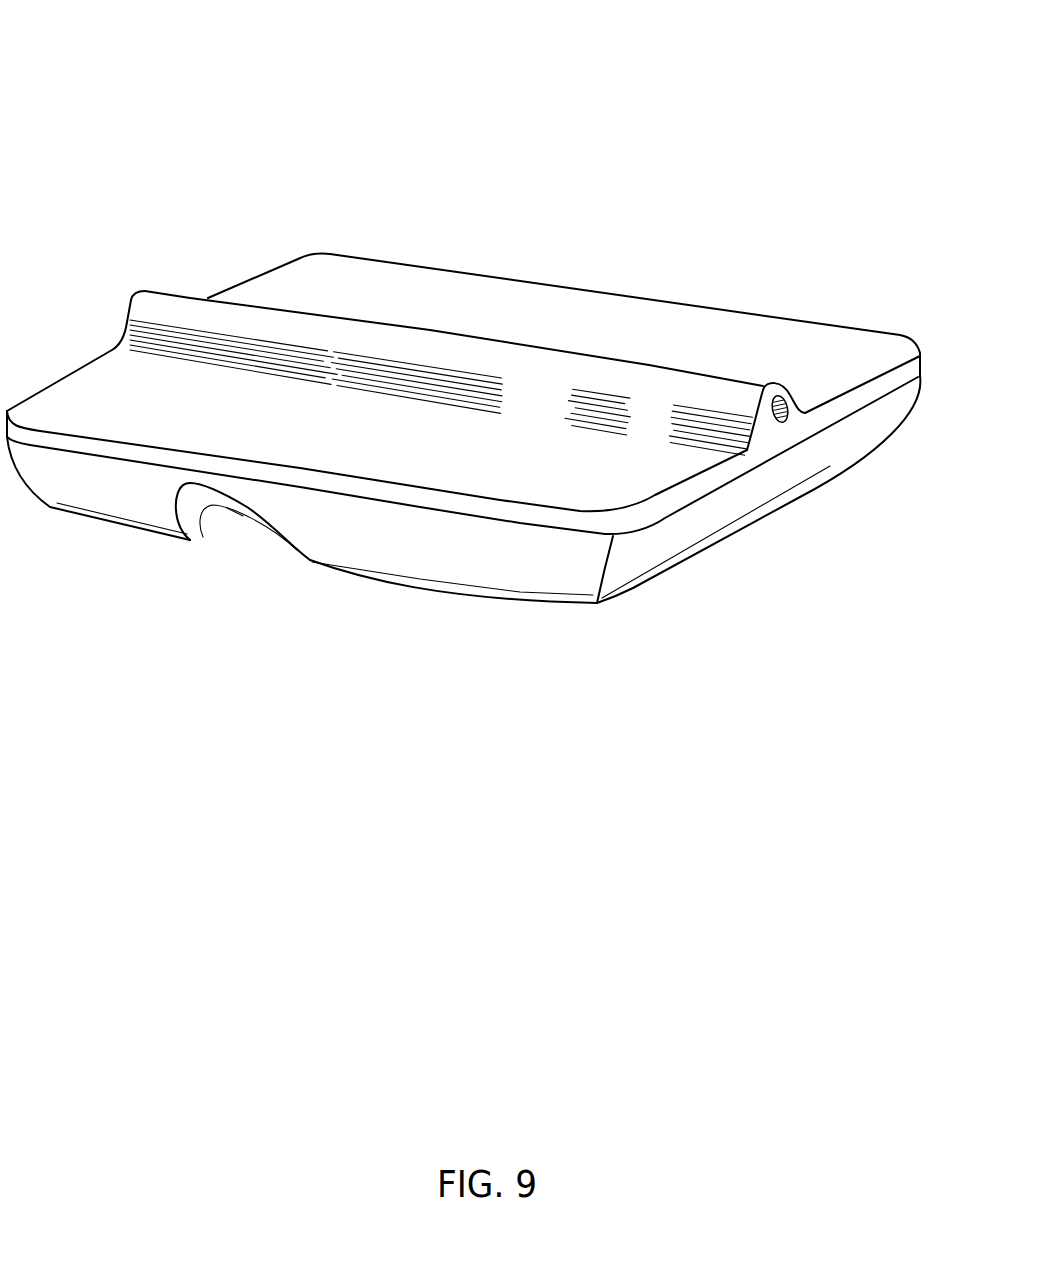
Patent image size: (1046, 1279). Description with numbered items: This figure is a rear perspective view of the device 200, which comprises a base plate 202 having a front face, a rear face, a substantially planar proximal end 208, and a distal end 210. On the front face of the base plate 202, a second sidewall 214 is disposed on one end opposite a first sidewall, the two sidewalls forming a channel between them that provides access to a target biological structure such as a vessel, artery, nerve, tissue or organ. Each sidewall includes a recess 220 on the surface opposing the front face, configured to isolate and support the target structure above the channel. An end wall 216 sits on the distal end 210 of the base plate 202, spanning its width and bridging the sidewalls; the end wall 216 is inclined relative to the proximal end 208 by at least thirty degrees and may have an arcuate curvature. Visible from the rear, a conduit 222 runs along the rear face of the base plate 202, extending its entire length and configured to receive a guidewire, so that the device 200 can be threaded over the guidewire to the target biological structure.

The device 200 is at (172, 93).
The base plate 202 is at (800, 318).
The proximal end 208 is at (673, 500).
The distal end 210 is at (15, 397).
The second sidewall 214 is at (417, 550).
The end wall 216 is at (650, 550).
The recess 220 is at (227, 530).
The conduit 222 is at (477, 338).